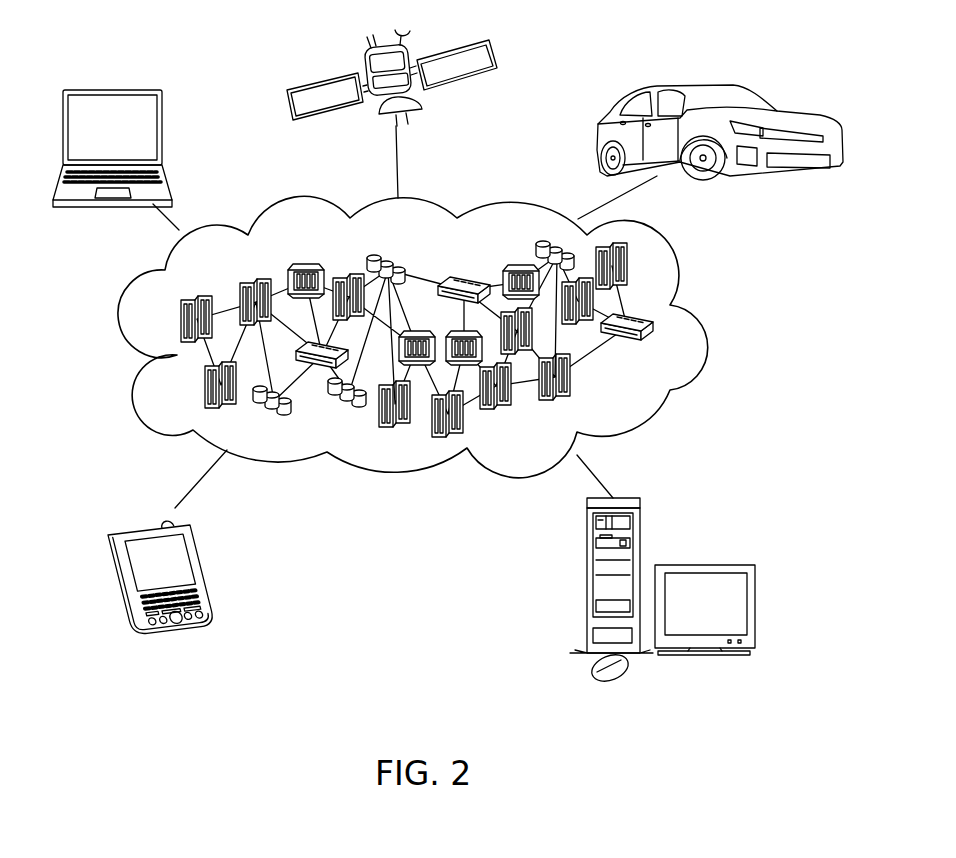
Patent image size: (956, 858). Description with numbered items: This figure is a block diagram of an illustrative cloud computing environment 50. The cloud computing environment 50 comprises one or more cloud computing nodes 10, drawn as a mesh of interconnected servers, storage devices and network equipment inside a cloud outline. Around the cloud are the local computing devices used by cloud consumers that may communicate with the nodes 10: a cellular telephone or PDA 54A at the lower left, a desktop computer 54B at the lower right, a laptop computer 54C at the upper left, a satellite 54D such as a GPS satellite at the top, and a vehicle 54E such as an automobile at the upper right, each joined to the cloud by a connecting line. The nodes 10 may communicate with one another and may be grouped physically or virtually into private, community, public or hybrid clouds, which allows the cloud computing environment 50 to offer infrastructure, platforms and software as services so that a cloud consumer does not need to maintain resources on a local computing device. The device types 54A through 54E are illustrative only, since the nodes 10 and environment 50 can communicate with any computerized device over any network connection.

The cloud computing nodes 10 is at (641, 397).
The cloud computing environment 50 is at (703, 328).
The cellular telephone or PDA 54A is at (198, 553).
The desktop computer 54B is at (587, 540).
The laptop computer 54C is at (163, 131).
The satellites 54D is at (297, 123).
The vehicles 54E is at (598, 130).